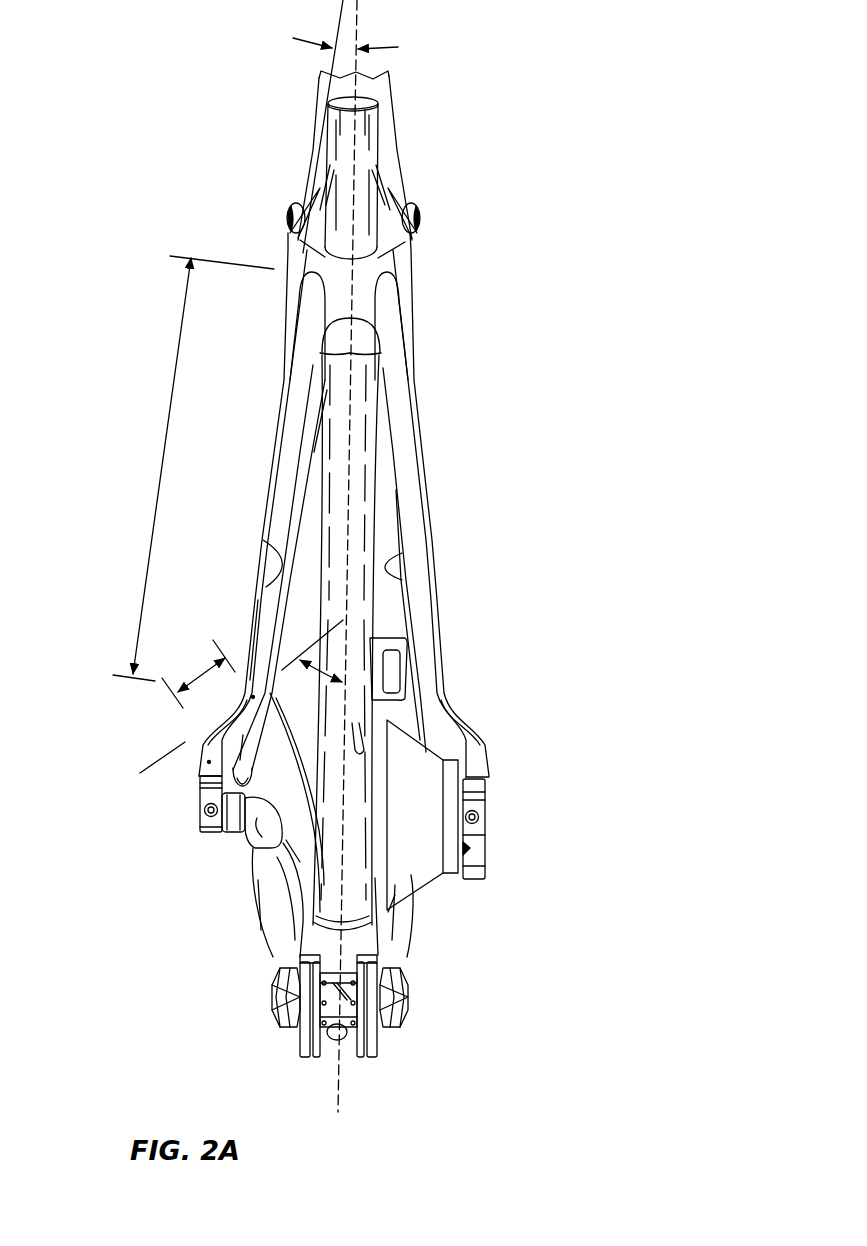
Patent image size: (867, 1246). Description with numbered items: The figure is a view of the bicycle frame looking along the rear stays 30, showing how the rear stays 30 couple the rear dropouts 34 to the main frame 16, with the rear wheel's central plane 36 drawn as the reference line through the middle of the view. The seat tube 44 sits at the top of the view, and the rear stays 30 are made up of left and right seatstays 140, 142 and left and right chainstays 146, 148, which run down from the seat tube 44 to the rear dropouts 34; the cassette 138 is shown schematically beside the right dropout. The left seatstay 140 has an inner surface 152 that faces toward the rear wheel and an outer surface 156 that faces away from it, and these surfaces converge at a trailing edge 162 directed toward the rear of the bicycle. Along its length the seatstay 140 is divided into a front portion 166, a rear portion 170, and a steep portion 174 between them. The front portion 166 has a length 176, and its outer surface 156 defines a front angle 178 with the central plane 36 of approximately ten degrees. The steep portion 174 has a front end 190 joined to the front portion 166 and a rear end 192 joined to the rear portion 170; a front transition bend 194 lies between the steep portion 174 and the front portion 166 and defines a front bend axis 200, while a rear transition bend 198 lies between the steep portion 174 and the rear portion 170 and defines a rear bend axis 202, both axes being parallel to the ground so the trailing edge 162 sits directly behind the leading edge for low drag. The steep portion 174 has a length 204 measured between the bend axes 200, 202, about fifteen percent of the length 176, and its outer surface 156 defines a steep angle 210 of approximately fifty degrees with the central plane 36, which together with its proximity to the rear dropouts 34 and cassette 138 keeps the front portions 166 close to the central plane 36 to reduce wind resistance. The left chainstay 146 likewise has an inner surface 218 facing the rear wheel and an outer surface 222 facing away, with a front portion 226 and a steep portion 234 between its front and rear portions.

The main frame 16 is at (392, 226).
The rear stays 30 is at (428, 508).
The rear dropouts 34 is at (208, 841).
The central plane 36 is at (340, 1092).
The seat tube 44 is at (372, 420).
The cassette 138 is at (432, 873).
The left seatstay 140 is at (303, 352).
The right seatstay 142 is at (392, 350).
The left chainstay 146 is at (268, 947).
The right chainstay 148 is at (400, 930).
The inner surface 152 is at (283, 560).
The outer surface 156 is at (270, 501).
The trailing edge 162 is at (265, 600).
The front portion 166 is at (278, 434).
The rear portion 170 is at (197, 774).
The steep portion 174 is at (470, 718).
The length 176 is at (193, 468).
The front angle 178 is at (388, 45).
The front end 190 is at (251, 696).
The rear end 192 is at (250, 760).
The front transition bend 194 is at (267, 706).
The rear transition bend 198 is at (200, 742).
The front bend axis 200 is at (262, 690).
The rear bend axis 202 is at (205, 762).
The length 204 is at (200, 672).
The steep angle 210 is at (312, 664).
The inner surface 218 is at (256, 890).
The outer surface 222 is at (259, 912).
The front portion 226 is at (262, 930).
The steep portion 234 is at (250, 860).